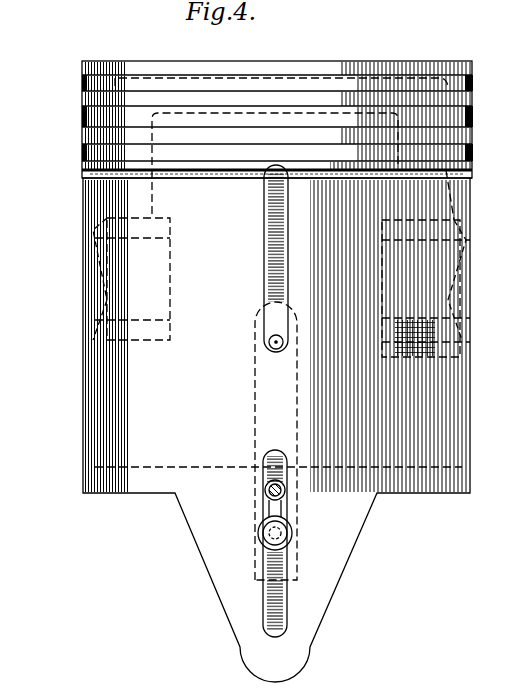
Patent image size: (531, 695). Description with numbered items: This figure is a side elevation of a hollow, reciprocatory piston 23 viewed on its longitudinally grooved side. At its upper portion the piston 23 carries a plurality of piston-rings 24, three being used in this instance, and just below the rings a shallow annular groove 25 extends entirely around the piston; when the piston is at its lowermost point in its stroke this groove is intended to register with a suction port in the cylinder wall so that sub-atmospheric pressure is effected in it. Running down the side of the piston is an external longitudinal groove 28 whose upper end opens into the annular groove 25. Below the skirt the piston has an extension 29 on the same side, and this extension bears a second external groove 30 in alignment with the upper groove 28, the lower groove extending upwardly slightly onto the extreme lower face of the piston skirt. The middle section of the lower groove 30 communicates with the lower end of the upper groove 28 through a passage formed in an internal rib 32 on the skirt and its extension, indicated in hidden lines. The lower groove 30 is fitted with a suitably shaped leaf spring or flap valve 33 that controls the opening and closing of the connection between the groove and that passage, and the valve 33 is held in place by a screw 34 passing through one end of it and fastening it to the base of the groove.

The piston 23 is at (360, 62).
The piston-rings 24 is at (476, 88).
The annular groove 25 is at (218, 173).
The longitudinal groove 28 is at (282, 262).
The extension 29 is at (222, 577).
The external groove 30 is at (280, 602).
The internal rib 32 is at (255, 394).
The leaf spring valve 33 is at (293, 531).
The screw 34 is at (265, 491).